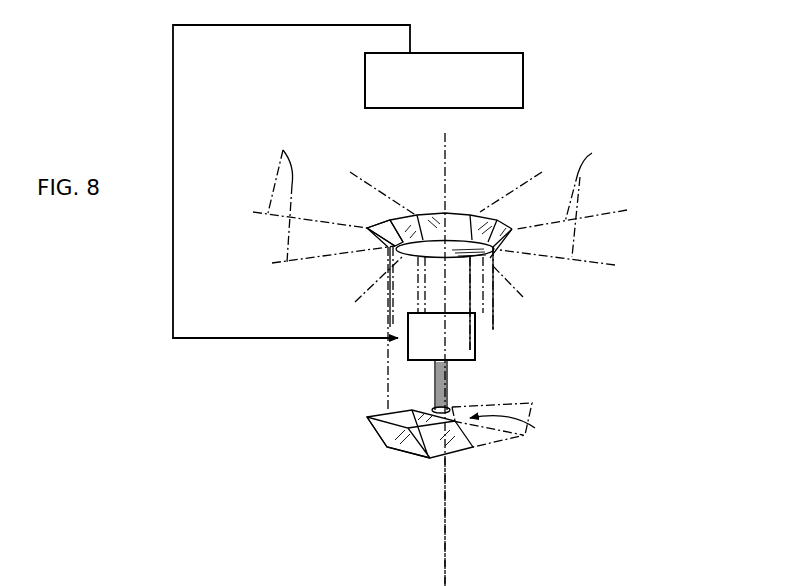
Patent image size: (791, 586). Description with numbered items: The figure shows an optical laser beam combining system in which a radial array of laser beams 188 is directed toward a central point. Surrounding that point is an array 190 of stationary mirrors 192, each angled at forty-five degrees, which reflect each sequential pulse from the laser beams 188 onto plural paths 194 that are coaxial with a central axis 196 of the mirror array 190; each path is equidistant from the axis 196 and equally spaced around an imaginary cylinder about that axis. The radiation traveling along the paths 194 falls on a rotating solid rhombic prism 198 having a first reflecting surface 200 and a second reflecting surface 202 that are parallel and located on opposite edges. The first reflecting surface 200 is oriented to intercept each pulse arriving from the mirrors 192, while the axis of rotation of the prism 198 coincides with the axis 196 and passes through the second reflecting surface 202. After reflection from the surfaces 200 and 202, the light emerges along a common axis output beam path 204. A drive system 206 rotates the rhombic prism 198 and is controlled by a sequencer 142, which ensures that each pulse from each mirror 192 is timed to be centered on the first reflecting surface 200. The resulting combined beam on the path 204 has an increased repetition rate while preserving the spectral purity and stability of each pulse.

The sequencer 142 is at (447, 52).
The laser beams 188 is at (438, 222).
The array of stationary mirrors 190 is at (449, 211).
The stationary mirror 192 is at (381, 224).
The plural paths 194 is at (385, 380).
The central axis 196 is at (443, 162).
The rotating solid rhombic prism 198 is at (412, 453).
The first reflecting surface 200 is at (378, 435).
The second reflecting surface 202 is at (520, 442).
The common axis output beam path 204 is at (446, 498).
The drive system 206 is at (477, 350).